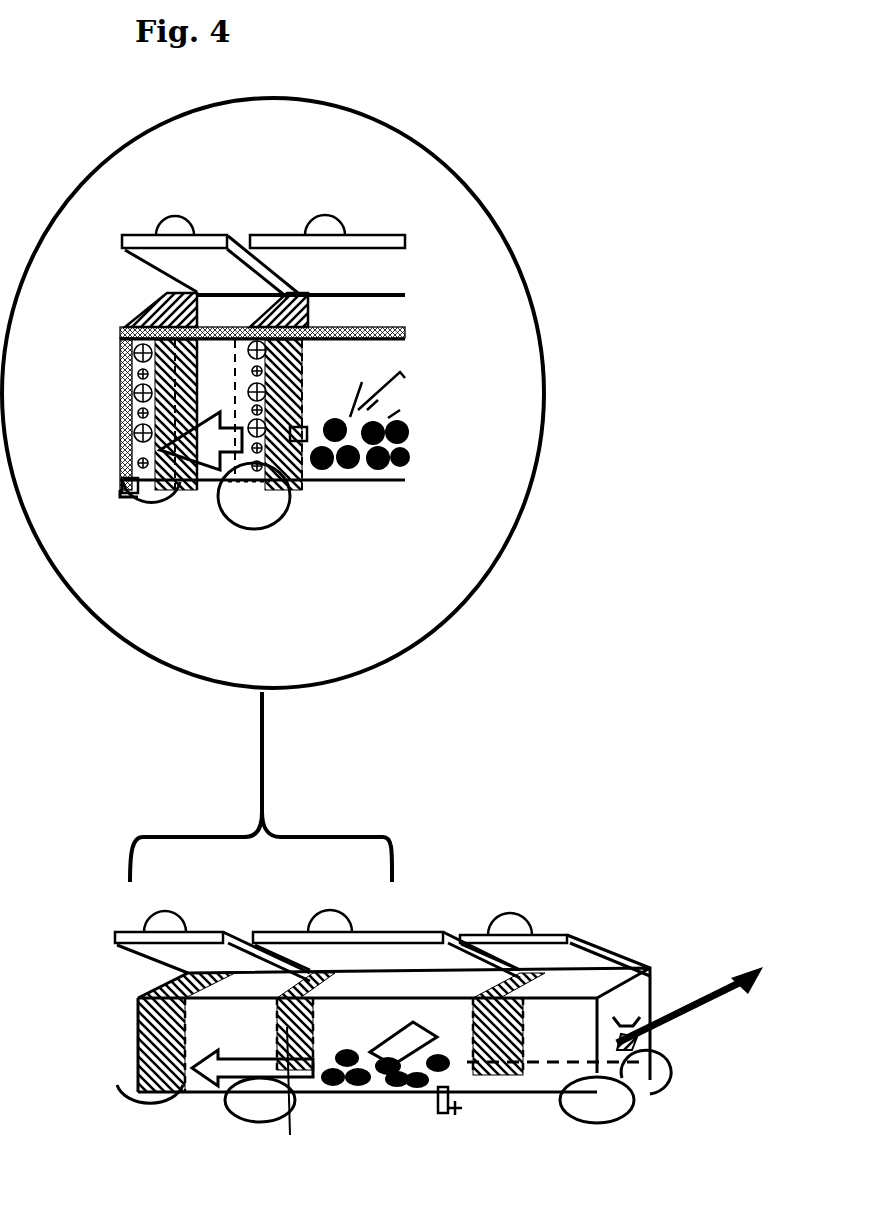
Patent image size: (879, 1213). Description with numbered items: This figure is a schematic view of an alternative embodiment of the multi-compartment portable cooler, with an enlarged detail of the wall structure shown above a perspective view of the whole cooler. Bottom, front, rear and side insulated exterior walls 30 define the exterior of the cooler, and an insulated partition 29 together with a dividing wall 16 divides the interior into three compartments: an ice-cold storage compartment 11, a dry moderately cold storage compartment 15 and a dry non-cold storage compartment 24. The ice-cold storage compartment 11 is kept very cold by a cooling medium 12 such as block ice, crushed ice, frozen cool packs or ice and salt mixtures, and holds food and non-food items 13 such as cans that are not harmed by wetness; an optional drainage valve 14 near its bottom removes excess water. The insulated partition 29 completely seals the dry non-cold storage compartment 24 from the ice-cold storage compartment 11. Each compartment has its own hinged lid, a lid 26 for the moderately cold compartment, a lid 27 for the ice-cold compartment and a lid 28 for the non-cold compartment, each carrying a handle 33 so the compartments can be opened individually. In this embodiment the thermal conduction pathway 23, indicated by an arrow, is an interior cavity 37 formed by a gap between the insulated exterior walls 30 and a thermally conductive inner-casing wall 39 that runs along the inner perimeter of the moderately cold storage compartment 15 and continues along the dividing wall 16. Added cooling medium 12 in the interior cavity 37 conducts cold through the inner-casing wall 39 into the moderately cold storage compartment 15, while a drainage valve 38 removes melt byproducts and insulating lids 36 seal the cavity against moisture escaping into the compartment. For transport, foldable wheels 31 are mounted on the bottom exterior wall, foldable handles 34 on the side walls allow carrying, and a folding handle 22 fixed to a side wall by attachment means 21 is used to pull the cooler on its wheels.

The ice-cold storage compartment 11 is at (343, 447).
The cooling medium 12 is at (135, 367).
The food and non-food items 13 is at (367, 443).
The drainage valve 14 is at (437, 1110).
The dry moderately cold storage compartment 15 is at (223, 377).
The dividing wall 16 is at (278, 482).
The attachment means 21 is at (640, 1043).
The folding handle 22 is at (700, 990).
The thermal conduction pathway 23 is at (222, 435).
The dry non-cold storage compartment 24 is at (547, 1040).
The lid 26 is at (218, 237).
The lid 27 is at (393, 933).
The lid 28 is at (553, 937).
The insulated partition 29 is at (512, 1043).
The insulated exterior walls 30 is at (120, 336).
The foldable wheels 31 is at (117, 1095).
The handle 33 is at (172, 226).
The foldable handles 34 is at (638, 1025).
The lids 36 is at (292, 292).
The interior cavity 37 is at (140, 416).
The drainage valve 38 is at (135, 482).
The inner-casing wall 39 is at (128, 470).